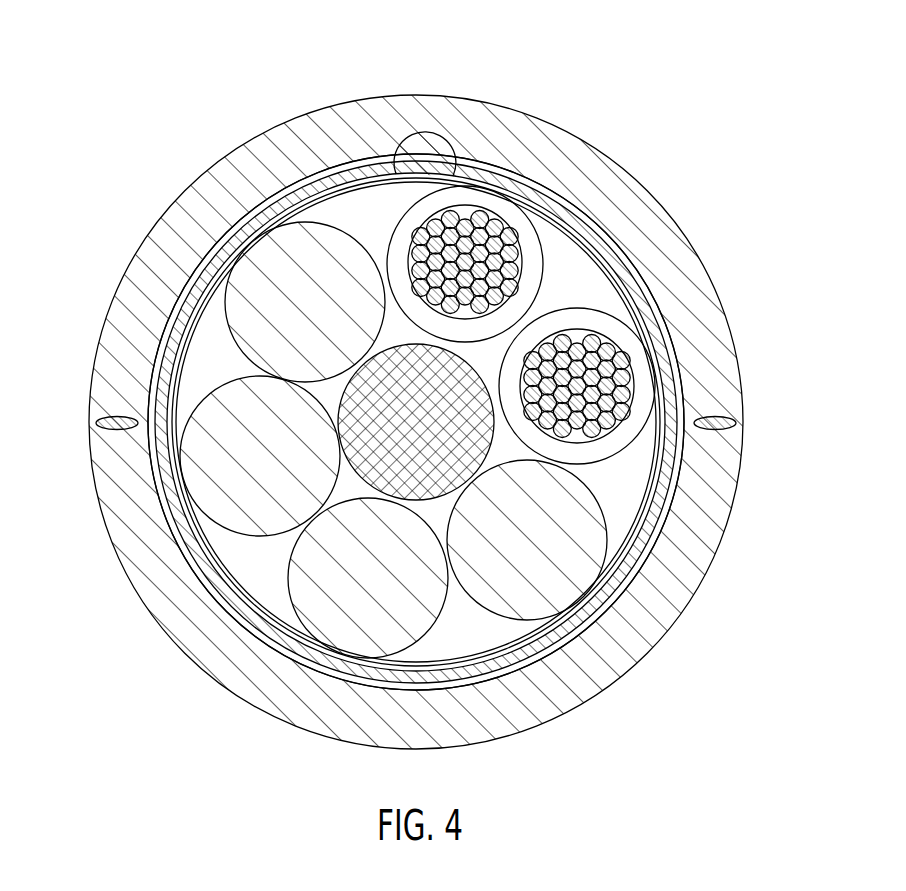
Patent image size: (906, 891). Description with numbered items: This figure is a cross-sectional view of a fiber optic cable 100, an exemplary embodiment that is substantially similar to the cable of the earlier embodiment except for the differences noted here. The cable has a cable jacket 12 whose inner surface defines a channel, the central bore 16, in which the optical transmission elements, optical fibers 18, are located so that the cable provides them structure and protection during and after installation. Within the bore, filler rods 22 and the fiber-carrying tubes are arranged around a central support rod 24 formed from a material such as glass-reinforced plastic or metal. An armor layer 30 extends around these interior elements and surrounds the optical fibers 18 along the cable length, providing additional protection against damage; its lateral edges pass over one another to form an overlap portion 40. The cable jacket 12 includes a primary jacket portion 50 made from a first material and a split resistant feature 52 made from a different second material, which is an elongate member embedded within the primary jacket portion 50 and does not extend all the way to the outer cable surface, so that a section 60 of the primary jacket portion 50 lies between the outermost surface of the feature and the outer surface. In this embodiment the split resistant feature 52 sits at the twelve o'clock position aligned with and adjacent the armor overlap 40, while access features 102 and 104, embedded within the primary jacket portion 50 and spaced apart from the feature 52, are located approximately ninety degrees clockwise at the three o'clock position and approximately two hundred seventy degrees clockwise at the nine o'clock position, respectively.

The cable jacket 12 is at (120, 302).
The central bore 16 is at (257, 557).
The optical fibers 18 is at (500, 238).
The filler rods 22 is at (568, 567).
The central support rod 24 is at (410, 475).
The armor layer 30 is at (302, 192).
The overlap portion 40 is at (445, 165).
The primary jacket portion 50 is at (632, 188).
The split resistant feature 52 is at (443, 172).
The section of primary jacket portion 60 is at (428, 120).
The cable 100 is at (411, 398).
The access feature 102 is at (715, 415).
The access feature 104 is at (112, 430).